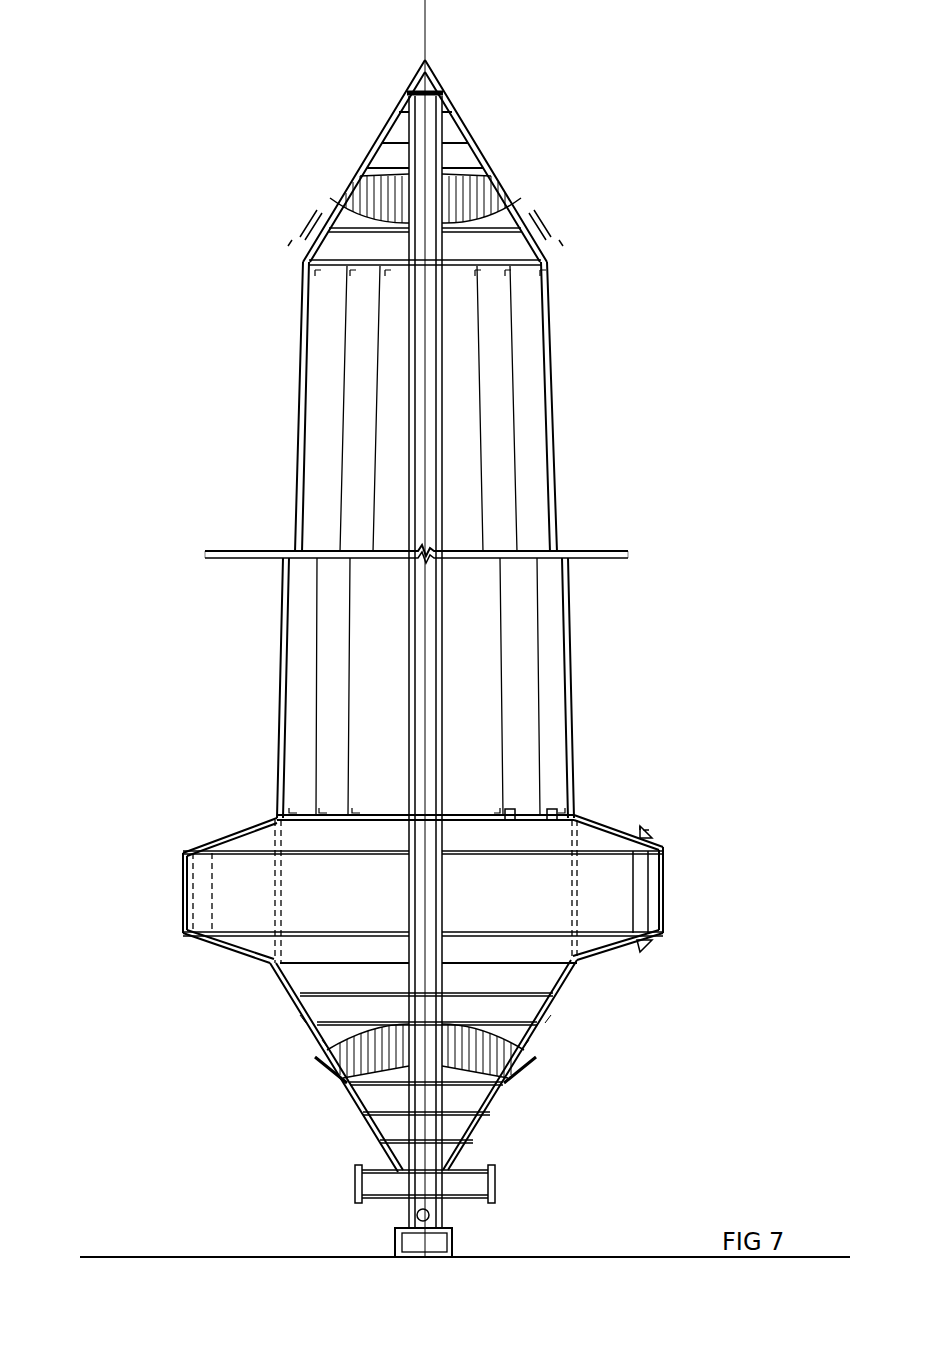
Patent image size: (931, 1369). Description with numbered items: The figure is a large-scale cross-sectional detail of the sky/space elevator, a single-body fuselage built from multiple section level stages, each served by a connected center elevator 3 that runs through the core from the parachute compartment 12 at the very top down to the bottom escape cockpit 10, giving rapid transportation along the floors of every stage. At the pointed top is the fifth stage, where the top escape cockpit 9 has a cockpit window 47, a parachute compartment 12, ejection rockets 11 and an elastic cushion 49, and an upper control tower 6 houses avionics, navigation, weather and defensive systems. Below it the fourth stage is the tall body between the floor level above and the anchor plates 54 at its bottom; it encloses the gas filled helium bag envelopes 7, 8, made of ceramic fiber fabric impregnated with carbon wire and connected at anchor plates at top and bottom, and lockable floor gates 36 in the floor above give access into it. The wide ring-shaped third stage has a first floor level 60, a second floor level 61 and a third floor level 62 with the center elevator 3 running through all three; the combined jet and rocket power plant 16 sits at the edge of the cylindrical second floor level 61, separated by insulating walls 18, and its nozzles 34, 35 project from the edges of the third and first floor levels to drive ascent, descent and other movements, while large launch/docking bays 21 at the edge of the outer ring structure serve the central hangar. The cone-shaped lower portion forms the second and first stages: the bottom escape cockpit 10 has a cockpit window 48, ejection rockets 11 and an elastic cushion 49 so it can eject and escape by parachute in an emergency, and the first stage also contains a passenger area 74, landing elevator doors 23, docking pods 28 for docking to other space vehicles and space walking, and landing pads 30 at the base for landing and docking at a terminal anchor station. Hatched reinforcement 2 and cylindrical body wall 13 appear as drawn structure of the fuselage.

The lower conical shell 2 is at (467, 1117).
The center elevator 3 is at (380, 133).
The upper control tower 6 is at (520, 247).
The gas filled helium bag envelope 7 is at (345, 376).
The gas filled helium bag envelope 8 is at (377, 393).
The top escape cockpit 9 is at (457, 132).
The bottom escape cockpit 10 is at (348, 1115).
The ejection rockets 11 is at (328, 196).
The parachute compartment 12 is at (437, 83).
The cylindrical body 13 is at (557, 505).
The combined jet and rocket power plant 16 is at (668, 868).
The insulating walls 18 is at (273, 882).
The launch/docking bays 21 is at (193, 908).
The landing elevator doors 23 is at (282, 947).
The docking pods 28 is at (356, 1183).
The landing pads 30 is at (450, 1260).
The nozzle 34 is at (652, 828).
The nozzle 35 is at (650, 950).
The lockable floor gates 36 is at (648, 826).
The cockpit window 47 is at (473, 158).
The cockpit window 48 is at (305, 1030).
The elastic cushion 49 is at (524, 204).
The anchor plates 54 is at (348, 268).
The first floor level 60 is at (290, 962).
The second floor level 61 is at (310, 930).
The third floor level 62 is at (262, 843).
The passenger area 74 is at (300, 998).